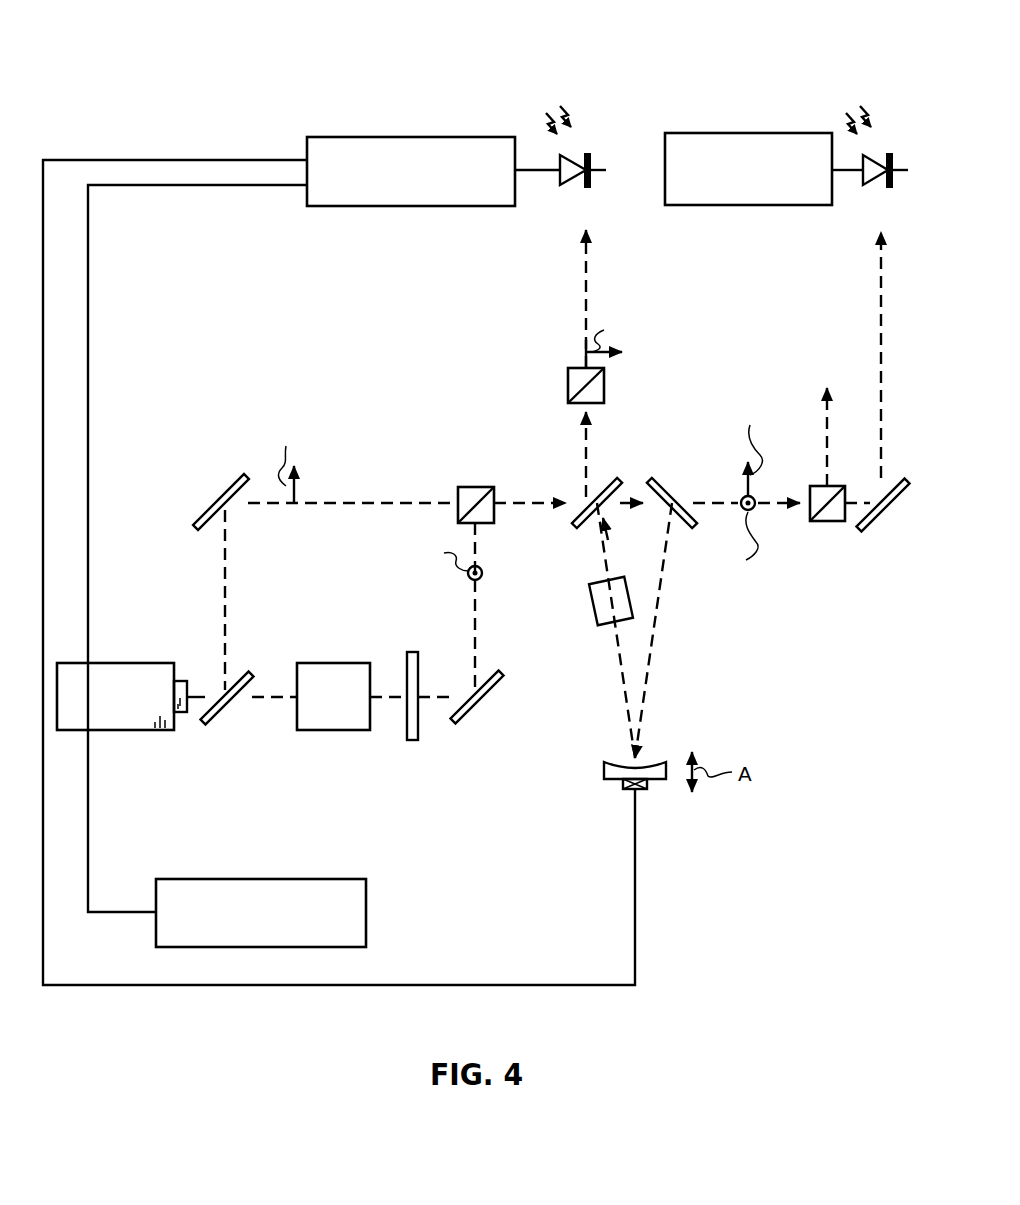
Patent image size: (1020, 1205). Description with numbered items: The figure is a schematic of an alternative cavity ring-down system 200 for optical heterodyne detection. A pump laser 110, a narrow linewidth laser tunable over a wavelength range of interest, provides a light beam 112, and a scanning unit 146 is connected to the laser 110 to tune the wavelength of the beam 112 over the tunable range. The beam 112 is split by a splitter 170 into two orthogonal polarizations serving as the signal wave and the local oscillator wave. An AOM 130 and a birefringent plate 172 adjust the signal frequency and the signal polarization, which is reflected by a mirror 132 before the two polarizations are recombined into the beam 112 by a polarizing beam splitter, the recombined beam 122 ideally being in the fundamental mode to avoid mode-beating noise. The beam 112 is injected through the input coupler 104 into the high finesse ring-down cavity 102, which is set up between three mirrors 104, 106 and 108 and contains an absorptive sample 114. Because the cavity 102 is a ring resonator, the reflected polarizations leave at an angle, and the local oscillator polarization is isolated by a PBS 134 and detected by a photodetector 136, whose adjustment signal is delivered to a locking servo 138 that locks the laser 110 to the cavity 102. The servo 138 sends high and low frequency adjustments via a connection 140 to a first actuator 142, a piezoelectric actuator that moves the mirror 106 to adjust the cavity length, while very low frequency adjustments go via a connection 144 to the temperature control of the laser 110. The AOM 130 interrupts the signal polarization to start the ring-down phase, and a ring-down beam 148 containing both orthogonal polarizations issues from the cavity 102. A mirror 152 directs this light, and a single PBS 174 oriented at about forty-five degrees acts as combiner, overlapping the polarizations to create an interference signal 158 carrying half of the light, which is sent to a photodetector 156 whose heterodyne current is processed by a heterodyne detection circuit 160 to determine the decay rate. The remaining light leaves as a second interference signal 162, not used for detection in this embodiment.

The cavity ring-down system 200 is at (183, 70).
The locking servo 138 is at (386, 137).
The photodetector 136 is at (590, 158).
The heterodyne detection circuit 160 is at (744, 133).
The photodetector 156 is at (876, 186).
The interference signal 158 is at (874, 332).
The connection 144 is at (88, 322).
The PBS 134 is at (568, 392).
The second interference signal 162 is at (826, 406).
The recombined beam 122 is at (218, 494).
The light beam 112 is at (204, 688).
The mirror 108 is at (658, 480).
The ring-down beam 148 is at (708, 502).
The input coupler 104 is at (578, 525).
The PBS 174 is at (828, 521).
The mirror 152 is at (870, 530).
The pump laser 110 is at (116, 663).
The absorptive sample 114 is at (594, 611).
The splitter 170 is at (226, 720).
The AOM 130 is at (342, 730).
The birefringent plate 172 is at (413, 740).
The mirror 132 is at (470, 718).
The mirror 106 is at (618, 762).
The ring-down cavity 102 is at (687, 660).
The first actuator 142 is at (622, 786).
The scanning unit 146 is at (234, 879).
The connection 140 is at (476, 985).